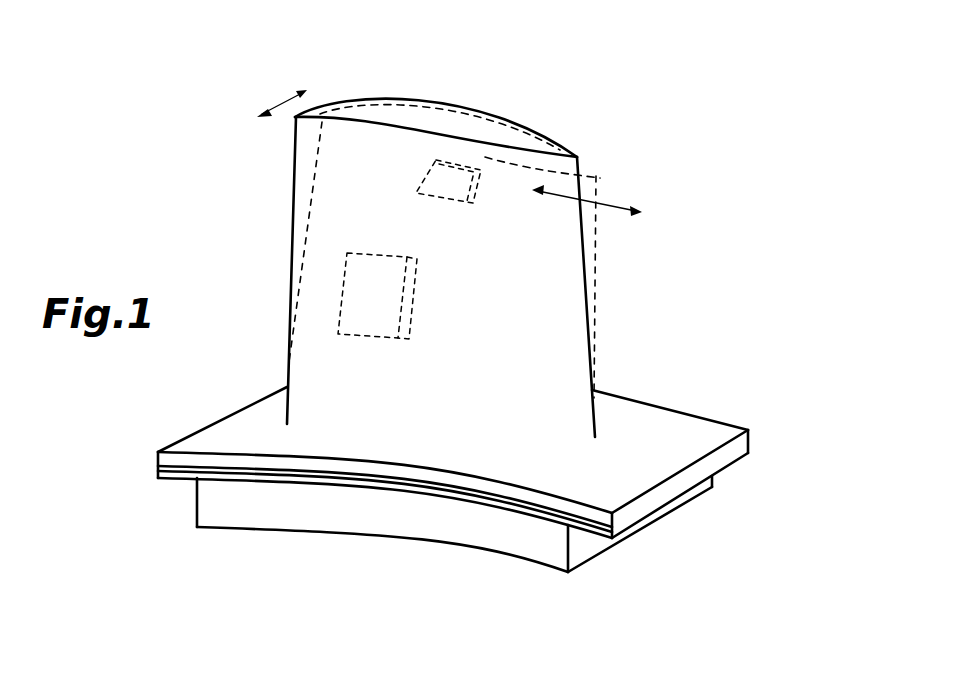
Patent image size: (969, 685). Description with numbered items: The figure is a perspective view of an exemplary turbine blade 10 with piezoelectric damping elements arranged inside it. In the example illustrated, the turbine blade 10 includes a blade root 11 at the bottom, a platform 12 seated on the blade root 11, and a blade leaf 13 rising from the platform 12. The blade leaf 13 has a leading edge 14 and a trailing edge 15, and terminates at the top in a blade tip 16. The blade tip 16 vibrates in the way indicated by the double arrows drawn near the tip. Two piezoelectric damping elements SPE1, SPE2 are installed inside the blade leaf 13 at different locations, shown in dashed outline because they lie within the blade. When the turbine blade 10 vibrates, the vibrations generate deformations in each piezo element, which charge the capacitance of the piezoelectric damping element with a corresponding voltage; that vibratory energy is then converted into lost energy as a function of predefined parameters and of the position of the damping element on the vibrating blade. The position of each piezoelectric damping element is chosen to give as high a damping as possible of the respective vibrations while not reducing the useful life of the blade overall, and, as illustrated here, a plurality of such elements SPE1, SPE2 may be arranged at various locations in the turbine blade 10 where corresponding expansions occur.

The turbine blade 10 is at (722, 317).
The blade root 11 is at (210, 512).
The platform 12 is at (717, 458).
The blade leaf 13 is at (536, 357).
The leading edge 14 is at (594, 267).
The trailing edge 15 is at (282, 259).
The blade tip 16 is at (477, 117).
The piezoelectric damping element SPE1 is at (353, 318).
The piezoelectric damping element SPE2 is at (430, 163).